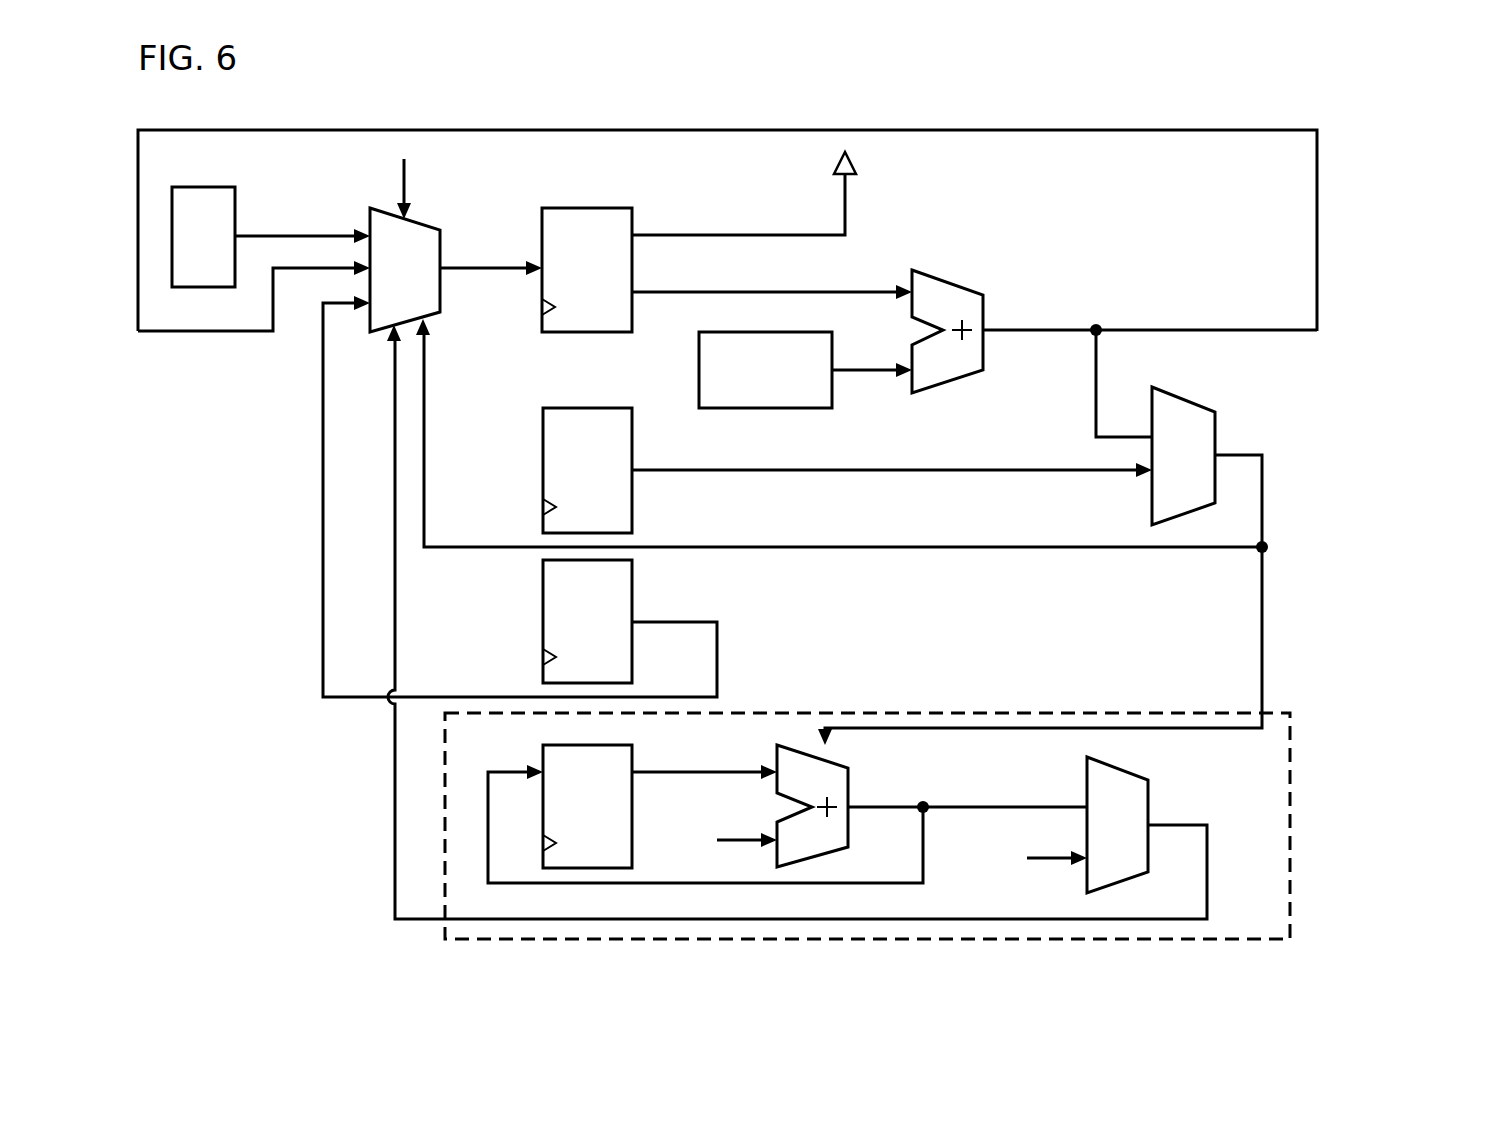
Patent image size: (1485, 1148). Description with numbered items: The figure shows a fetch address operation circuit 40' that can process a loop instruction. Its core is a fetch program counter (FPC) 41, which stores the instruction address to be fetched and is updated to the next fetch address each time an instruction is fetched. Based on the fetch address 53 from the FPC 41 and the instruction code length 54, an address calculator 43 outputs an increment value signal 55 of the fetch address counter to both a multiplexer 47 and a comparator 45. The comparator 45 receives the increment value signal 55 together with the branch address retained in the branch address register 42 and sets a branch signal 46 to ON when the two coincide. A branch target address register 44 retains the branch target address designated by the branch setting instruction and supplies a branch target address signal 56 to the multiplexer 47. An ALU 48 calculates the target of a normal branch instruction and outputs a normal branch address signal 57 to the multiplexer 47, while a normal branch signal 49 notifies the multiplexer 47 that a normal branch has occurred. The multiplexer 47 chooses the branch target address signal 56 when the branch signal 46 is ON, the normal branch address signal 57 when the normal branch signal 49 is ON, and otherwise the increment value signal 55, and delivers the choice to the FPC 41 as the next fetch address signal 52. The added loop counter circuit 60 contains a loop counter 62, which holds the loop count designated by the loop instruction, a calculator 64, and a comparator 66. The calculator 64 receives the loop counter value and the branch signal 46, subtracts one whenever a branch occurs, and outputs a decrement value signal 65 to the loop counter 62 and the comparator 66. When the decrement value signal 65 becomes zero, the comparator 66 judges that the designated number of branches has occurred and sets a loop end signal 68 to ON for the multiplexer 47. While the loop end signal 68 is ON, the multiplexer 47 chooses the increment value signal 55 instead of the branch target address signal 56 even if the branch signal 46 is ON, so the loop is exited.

The fetch address operation circuit 40' is at (797, 204).
The ALU 48 is at (200, 187).
The normal branch address signal 57 is at (278, 236).
The normal branch signal 49 is at (406, 184).
The multiplexer 47 is at (428, 226).
The next fetch address signal 52 is at (462, 268).
The fetch program counter (FPC) 41 is at (586, 208).
The fetch address 53 is at (718, 292).
The instruction code length 54 is at (699, 380).
The address calculator 43 is at (942, 281).
The increment value signal 55 is at (1005, 330).
The comparator 45 is at (1198, 402).
The branch address register 42 is at (632, 462).
The branch signal 46 is at (796, 547).
The branch target address register 44 is at (632, 602).
The branch target address signal 56 is at (717, 656).
The loop counter circuit 60 is at (1290, 766).
The loop counter 62 is at (588, 745).
The calculator 64 is at (848, 778).
The decrement value signal 65 is at (870, 807).
The comparator 66 is at (1148, 800).
The loop end signal 68 is at (684, 919).